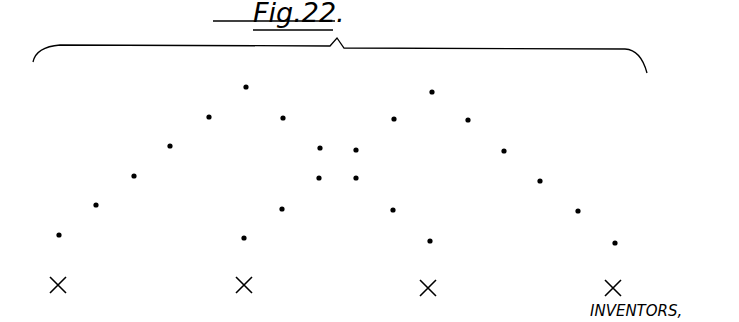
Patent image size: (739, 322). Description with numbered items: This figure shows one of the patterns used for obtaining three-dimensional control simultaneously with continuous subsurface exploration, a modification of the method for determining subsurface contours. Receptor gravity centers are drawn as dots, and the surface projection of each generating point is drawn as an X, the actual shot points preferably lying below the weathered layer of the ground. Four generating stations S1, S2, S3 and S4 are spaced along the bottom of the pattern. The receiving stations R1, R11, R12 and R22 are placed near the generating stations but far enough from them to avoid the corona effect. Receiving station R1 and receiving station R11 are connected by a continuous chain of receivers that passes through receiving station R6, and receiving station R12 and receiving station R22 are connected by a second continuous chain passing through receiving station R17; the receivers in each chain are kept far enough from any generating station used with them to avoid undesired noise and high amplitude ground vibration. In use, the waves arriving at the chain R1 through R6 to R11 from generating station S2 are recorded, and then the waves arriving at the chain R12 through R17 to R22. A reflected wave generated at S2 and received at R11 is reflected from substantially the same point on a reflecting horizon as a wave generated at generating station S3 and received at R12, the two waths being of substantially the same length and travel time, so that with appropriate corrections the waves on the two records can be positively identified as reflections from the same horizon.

The receiving station R1 is at (62, 228).
The receiving station R6 is at (251, 81).
The receptor station R11 is at (437, 235).
The receptor station R12 is at (250, 231).
The receiving station R17 is at (440, 85).
The receiving station R22 is at (621, 237).
The generating station S1 is at (57, 295).
The generating station S2 is at (243, 297).
The generating station S3 is at (436, 285).
The generating station S4 is at (622, 285).